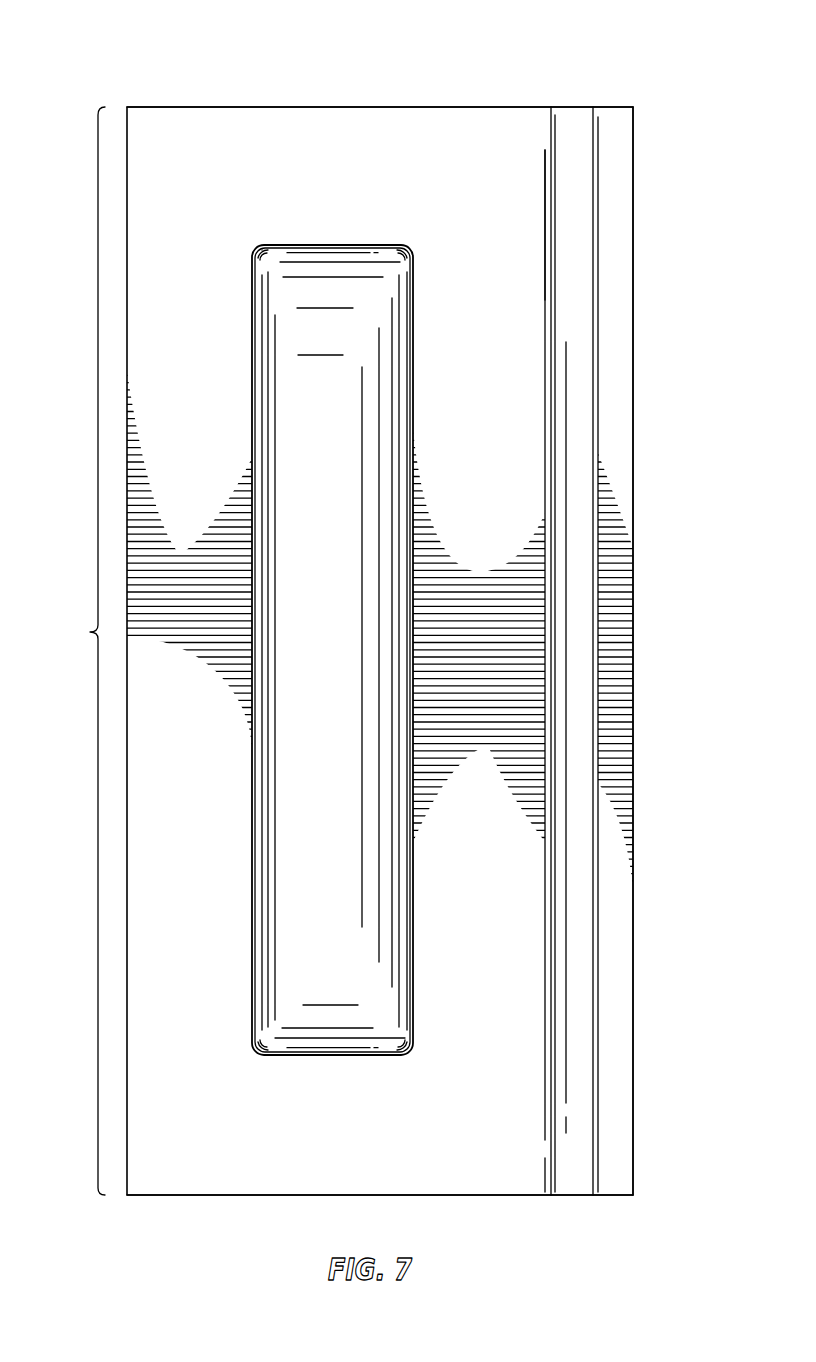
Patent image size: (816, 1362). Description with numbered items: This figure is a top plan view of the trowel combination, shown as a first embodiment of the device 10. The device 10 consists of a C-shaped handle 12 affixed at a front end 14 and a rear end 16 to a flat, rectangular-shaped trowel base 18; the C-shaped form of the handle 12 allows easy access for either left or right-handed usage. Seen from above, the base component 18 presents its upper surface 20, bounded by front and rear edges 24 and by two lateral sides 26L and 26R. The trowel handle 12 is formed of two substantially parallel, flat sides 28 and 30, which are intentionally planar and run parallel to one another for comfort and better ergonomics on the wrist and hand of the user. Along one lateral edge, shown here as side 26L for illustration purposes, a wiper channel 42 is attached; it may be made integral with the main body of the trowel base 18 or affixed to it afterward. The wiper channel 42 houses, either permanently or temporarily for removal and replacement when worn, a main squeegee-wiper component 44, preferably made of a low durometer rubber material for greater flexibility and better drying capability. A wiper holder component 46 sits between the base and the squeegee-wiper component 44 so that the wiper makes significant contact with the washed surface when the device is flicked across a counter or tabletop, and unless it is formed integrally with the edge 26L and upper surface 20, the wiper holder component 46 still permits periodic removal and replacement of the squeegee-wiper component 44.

The device 10 is at (81, 651).
The C-shaped handle 12 is at (432, 995).
The front end 14 is at (335, 1057).
The rear end 16 is at (337, 243).
The trowel base 18 is at (189, 130).
The upper surface 20 is at (469, 210).
The front and rear edges 24 is at (300, 107).
The lateral side 26R is at (127, 236).
The lateral side 26L is at (545, 293).
The flat side 28 is at (413, 377).
The flat side 30 is at (265, 382).
The wiper channel 42 is at (593, 107).
The squeegee-wiper component 44 is at (620, 133).
The wiper holder component 46 is at (547, 135).